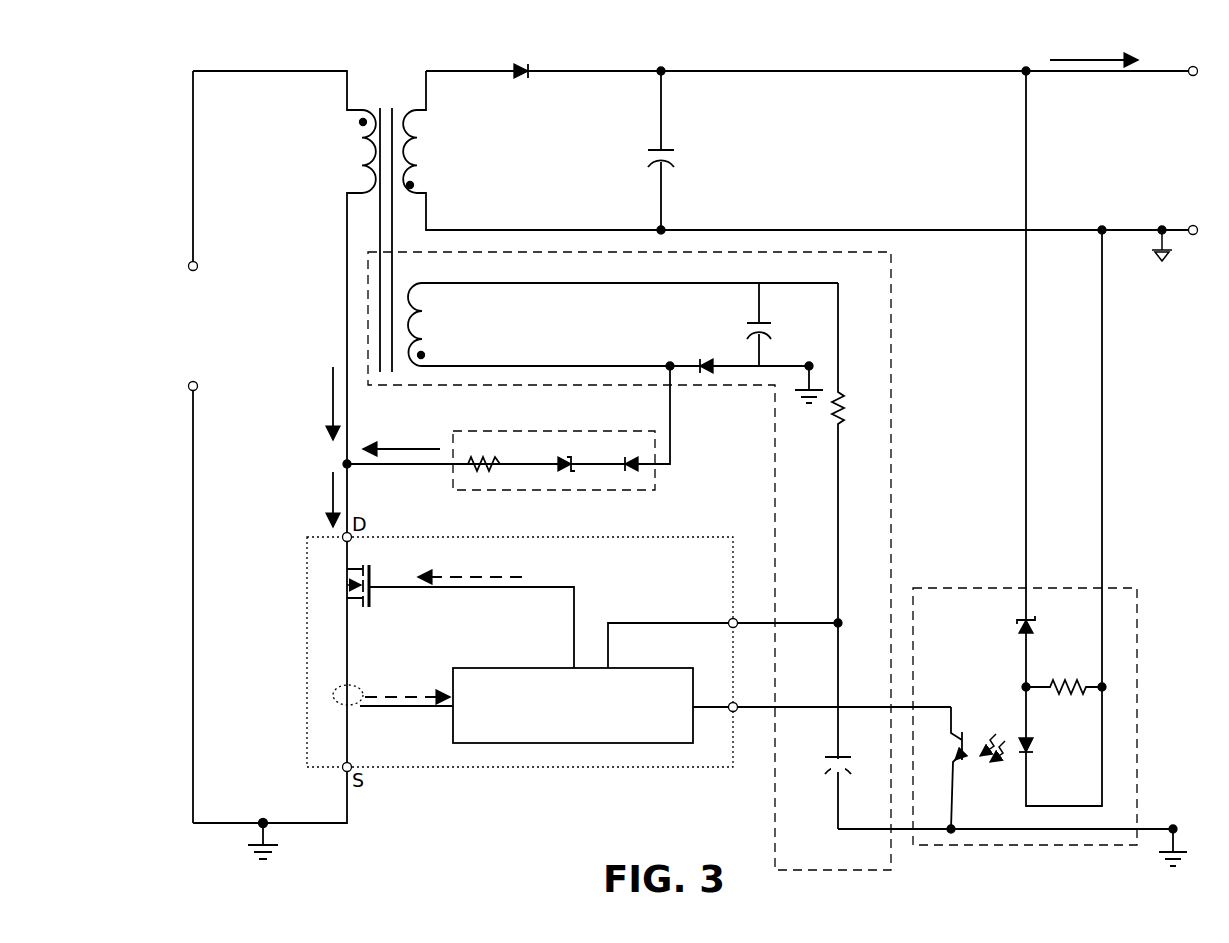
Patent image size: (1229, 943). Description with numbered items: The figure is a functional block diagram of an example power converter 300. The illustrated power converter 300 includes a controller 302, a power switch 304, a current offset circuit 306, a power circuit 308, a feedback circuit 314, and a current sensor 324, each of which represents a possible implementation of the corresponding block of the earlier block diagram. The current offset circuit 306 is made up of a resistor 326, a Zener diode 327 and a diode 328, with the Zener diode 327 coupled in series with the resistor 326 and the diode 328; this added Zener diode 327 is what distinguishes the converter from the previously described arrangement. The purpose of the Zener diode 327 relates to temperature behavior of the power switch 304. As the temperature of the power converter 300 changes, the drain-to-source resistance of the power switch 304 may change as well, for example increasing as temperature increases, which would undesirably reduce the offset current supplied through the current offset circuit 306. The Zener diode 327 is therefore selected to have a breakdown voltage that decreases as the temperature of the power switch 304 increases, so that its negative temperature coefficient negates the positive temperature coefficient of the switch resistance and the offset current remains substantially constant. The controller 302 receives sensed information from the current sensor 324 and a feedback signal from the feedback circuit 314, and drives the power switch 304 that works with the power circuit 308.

The power converter 300 is at (990, 51).
The controller 302 is at (503, 666).
The power switch 304 is at (372, 571).
The current offset circuit 306 is at (655, 487).
The power circuit 308 is at (891, 432).
The feedback circuit 314 is at (1137, 622).
The current sensor 324 is at (357, 710).
The resistor 326 is at (493, 448).
The Zener diode 327 is at (568, 450).
The diode 328 is at (638, 450).